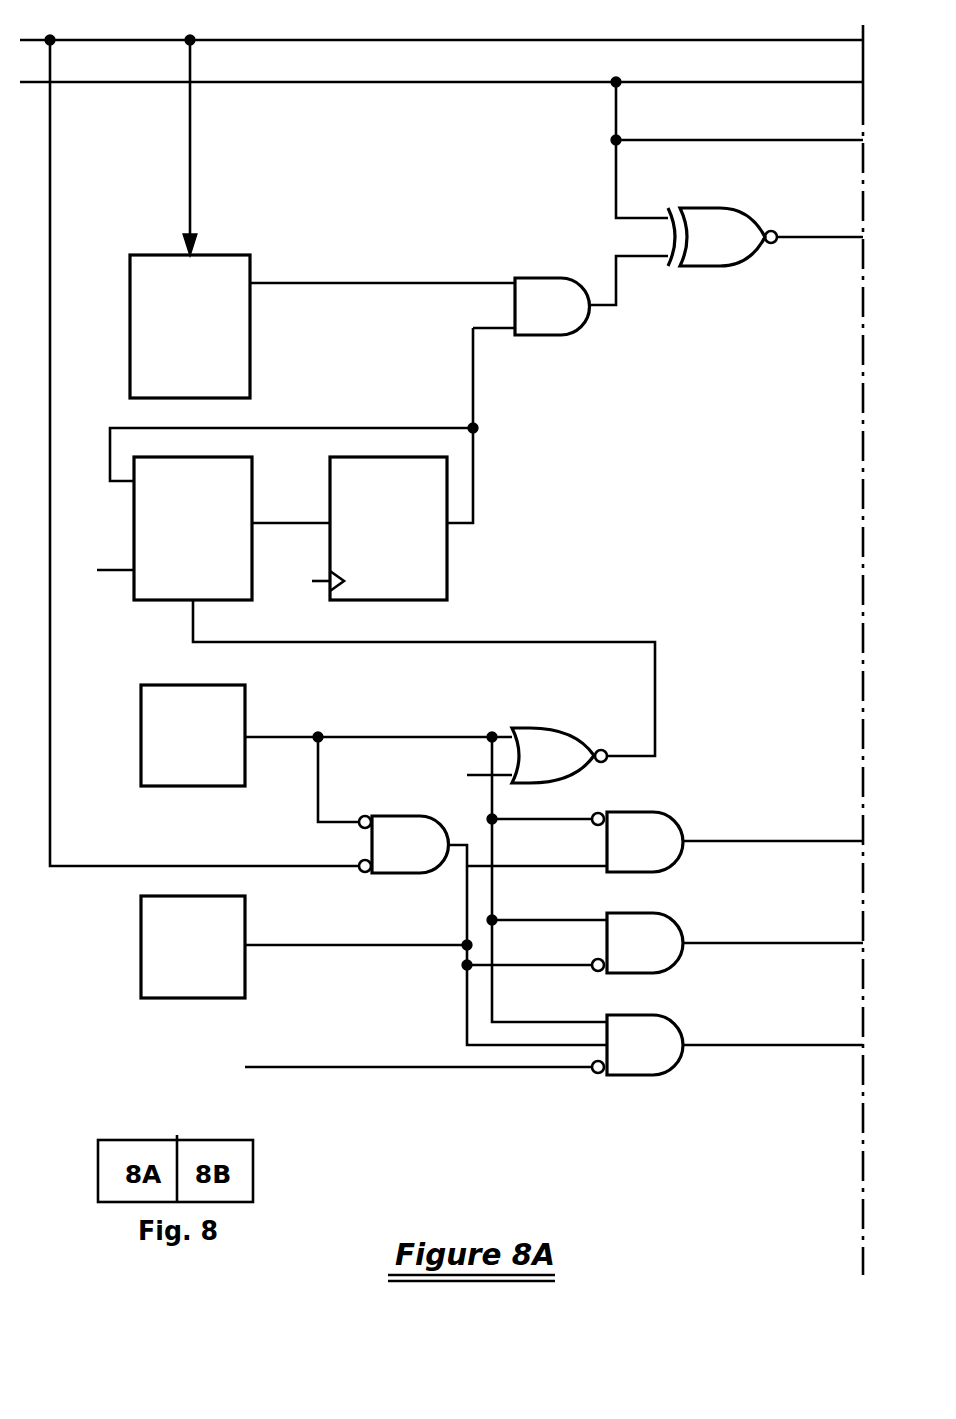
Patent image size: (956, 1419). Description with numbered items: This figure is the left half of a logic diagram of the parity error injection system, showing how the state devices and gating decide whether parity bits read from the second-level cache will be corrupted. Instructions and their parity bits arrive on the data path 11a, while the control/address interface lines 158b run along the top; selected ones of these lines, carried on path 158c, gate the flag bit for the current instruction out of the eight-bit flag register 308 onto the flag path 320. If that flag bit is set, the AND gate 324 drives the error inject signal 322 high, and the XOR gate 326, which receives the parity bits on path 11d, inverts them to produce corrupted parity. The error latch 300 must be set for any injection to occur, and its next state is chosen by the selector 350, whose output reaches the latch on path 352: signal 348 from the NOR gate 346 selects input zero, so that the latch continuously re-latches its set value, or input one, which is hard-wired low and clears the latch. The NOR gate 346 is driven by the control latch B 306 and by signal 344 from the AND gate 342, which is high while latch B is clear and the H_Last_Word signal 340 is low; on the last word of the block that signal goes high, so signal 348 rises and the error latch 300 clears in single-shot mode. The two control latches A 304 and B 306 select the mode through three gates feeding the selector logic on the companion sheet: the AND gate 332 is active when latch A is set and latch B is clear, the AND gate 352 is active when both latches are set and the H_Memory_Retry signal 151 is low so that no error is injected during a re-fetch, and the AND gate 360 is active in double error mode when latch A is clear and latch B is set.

The interface lines 158b is at (336, 40).
The data path 11a is at (478, 84).
The path 158c is at (190, 163).
The H_Last_Word signal 340 is at (52, 243).
The flag path 320 is at (370, 283).
The flag register 308 is at (252, 360).
The path 11d is at (617, 183).
The XOR gate 326 is at (742, 215).
The error inject signal 322 is at (620, 283).
The AND gate 324 is at (553, 337).
The selector 350 is at (253, 480).
The path 352 is at (278, 525).
The error latch 300 is at (448, 578).
The signal 348 is at (558, 642).
The control latch B 306 is at (247, 708).
The NOR gate 346 is at (548, 727).
The AND gate 332 is at (673, 822).
The signal 344 is at (465, 805).
The AND gate 360 is at (673, 920).
The AND gate 342 is at (425, 875).
The control latch A 304 is at (247, 925).
The H_Memory_Retry signal 151 is at (530, 1070).